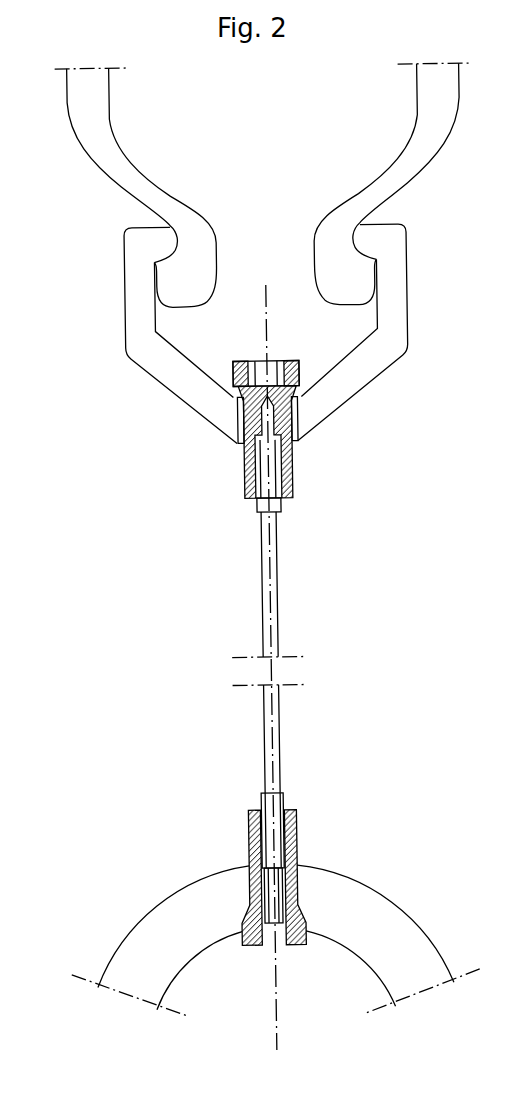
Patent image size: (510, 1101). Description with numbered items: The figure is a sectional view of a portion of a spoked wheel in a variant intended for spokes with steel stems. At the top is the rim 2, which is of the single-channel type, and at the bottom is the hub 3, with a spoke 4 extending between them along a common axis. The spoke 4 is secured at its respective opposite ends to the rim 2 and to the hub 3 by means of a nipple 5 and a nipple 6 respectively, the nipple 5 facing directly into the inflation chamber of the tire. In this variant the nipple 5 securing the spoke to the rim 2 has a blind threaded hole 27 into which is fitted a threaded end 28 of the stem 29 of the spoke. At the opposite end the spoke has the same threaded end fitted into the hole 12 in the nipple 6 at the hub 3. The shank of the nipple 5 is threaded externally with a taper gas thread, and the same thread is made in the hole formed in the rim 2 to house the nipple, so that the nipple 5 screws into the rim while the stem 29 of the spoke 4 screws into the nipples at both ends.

The rim 2 is at (156, 381).
The hub 3 is at (126, 920).
The spoke 4 is at (282, 620).
The nipple 5 is at (281, 477).
The nipple 6 is at (290, 842).
The hole 12 is at (250, 810).
The blind threaded hole 27 is at (269, 495).
The threaded end 28 is at (260, 493).
The stem 29 is at (274, 572).